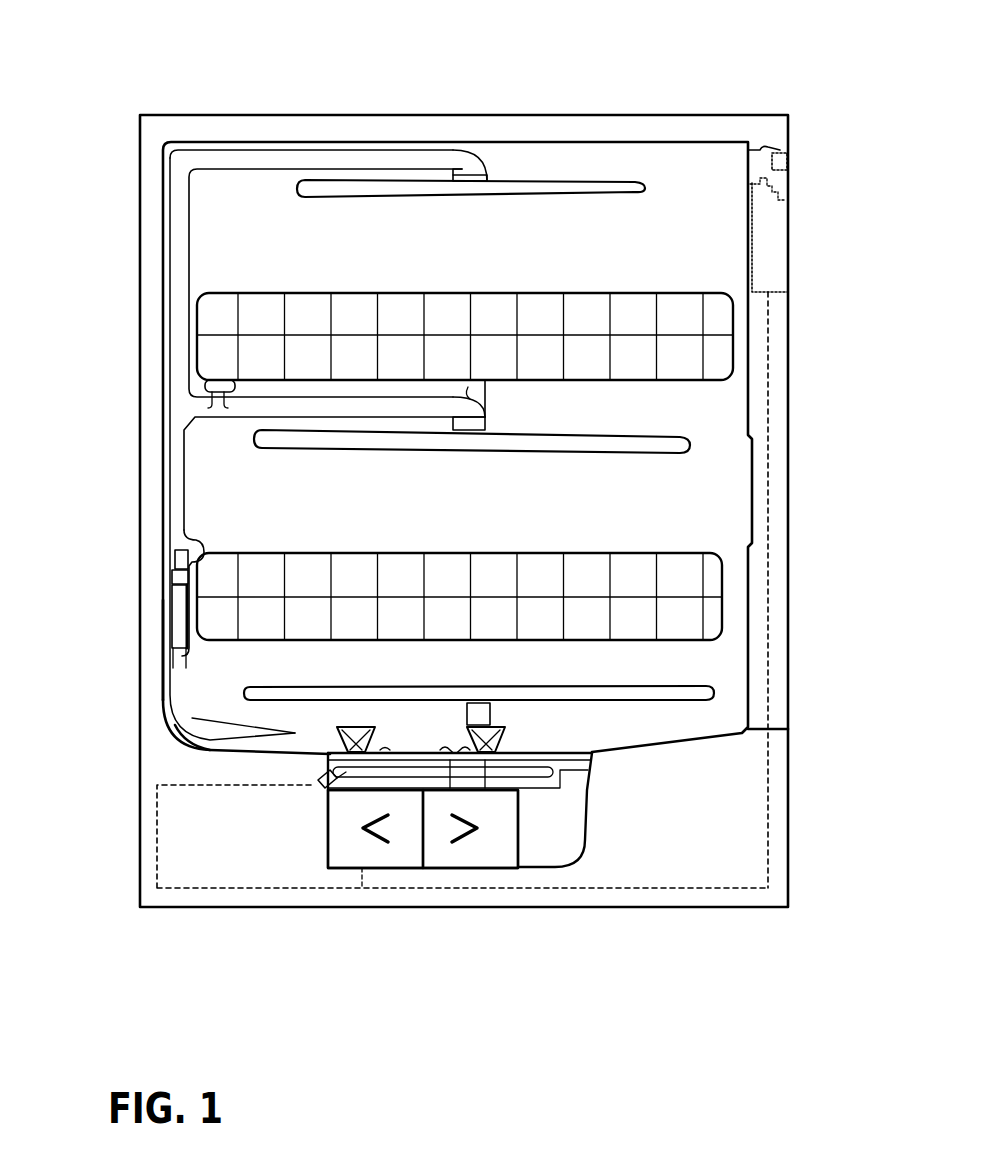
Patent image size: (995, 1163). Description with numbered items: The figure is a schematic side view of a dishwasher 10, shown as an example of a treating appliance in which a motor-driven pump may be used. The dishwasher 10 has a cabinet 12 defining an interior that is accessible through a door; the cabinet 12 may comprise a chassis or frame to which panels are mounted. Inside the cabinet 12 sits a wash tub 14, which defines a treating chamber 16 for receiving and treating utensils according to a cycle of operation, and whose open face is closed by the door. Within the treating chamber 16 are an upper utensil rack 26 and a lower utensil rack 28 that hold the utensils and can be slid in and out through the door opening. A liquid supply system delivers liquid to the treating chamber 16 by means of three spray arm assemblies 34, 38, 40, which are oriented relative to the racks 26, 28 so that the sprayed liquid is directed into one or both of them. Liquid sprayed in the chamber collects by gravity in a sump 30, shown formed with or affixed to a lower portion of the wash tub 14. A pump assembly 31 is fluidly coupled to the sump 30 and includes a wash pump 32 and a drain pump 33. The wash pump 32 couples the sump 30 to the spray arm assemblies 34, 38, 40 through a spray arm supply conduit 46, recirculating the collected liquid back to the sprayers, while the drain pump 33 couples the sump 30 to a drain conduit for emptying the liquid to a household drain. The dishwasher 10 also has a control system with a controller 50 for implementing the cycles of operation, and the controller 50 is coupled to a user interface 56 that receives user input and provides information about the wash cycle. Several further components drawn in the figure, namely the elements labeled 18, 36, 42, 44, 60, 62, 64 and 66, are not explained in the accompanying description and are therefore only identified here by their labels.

The dishwasher 10 is at (175, 25).
The cabinet 12 is at (138, 146).
The wash tub 14 is at (621, 758).
The treating chamber 16 is at (666, 531).
The door 18 is at (790, 498).
The upper utensil rack 26 is at (733, 328).
The lower utensil rack 28 is at (722, 588).
The sump 30 is at (583, 805).
The pump assembly 31 is at (437, 868).
The wash pump 32 is at (393, 868).
The drain pump 33 is at (490, 868).
The spray arm assembly 34 is at (708, 692).
The filter 36 is at (178, 632).
The spray arm assembly 38 is at (690, 440).
The spray arm assembly 40 is at (642, 190).
The supply line 42 is at (183, 507).
The filter housing 44 is at (200, 534).
The spray arm supply conduit 46 is at (362, 772).
The controller 50 is at (790, 232).
The user interface 56 is at (778, 163).
The supply conduit 60 is at (538, 141).
The tub side wall 62 is at (163, 694).
The tub bottom wall 64 is at (193, 740).
The hinge 66 is at (753, 147).